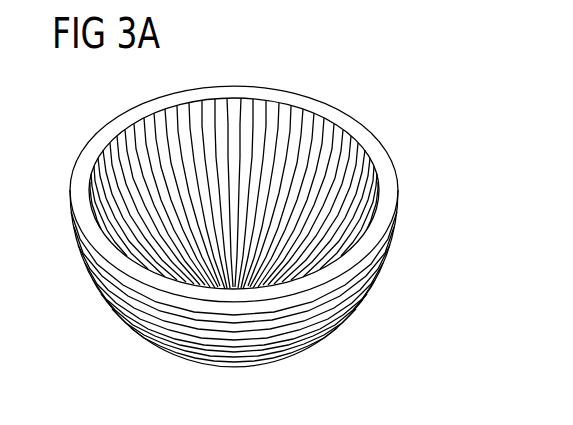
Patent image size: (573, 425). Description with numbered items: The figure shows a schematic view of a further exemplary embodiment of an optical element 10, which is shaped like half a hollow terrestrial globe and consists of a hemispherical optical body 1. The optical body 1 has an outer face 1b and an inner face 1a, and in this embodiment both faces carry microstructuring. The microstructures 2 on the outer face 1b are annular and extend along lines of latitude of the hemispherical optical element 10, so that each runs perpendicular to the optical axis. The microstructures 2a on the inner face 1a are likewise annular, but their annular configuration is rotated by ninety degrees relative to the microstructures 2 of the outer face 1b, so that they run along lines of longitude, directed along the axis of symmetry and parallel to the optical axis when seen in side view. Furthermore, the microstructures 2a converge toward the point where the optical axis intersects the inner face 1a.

The optical element 10 is at (250, 230).
The optical body 1 is at (386, 178).
The inner face 1a is at (258, 103).
The outer face 1b is at (106, 270).
The microstructures 2 is at (178, 348).
The microstructures 2a is at (205, 128).